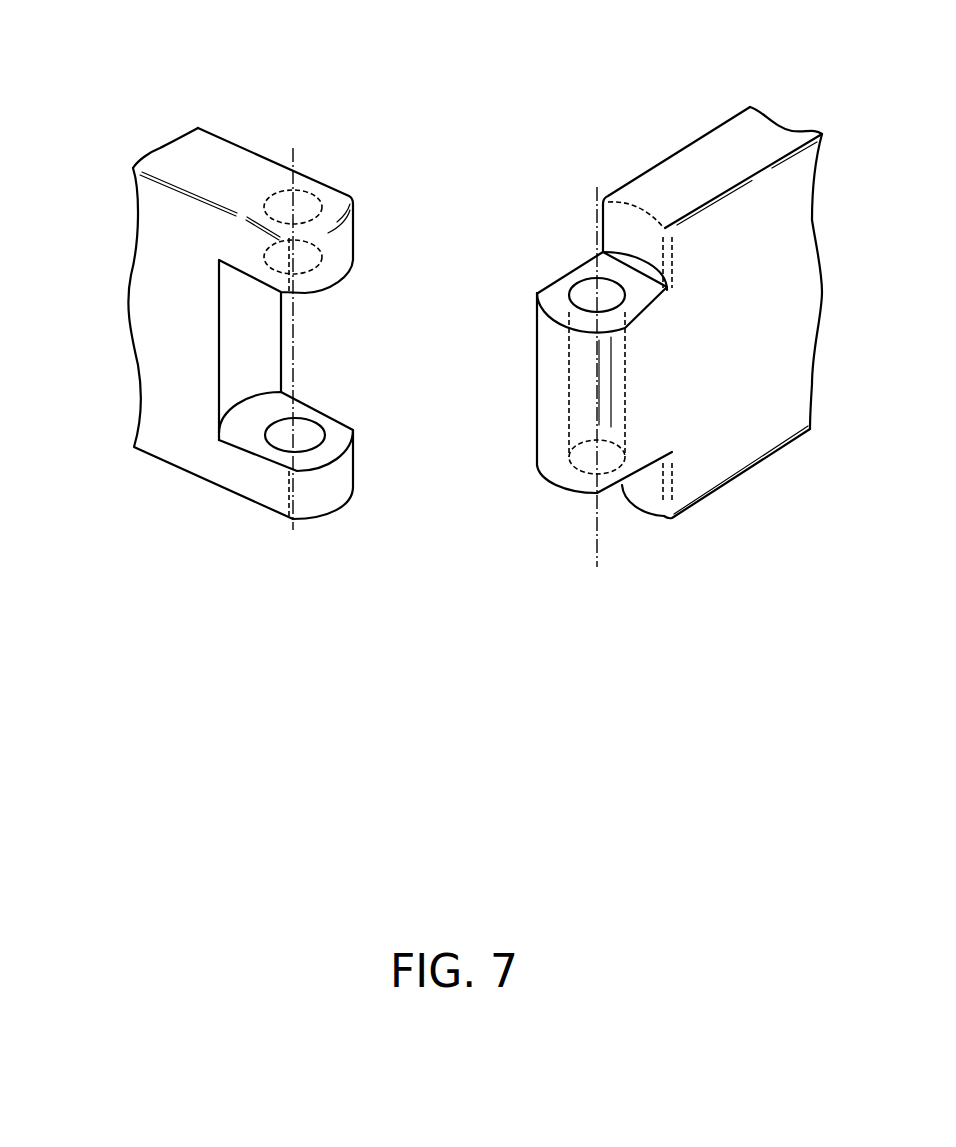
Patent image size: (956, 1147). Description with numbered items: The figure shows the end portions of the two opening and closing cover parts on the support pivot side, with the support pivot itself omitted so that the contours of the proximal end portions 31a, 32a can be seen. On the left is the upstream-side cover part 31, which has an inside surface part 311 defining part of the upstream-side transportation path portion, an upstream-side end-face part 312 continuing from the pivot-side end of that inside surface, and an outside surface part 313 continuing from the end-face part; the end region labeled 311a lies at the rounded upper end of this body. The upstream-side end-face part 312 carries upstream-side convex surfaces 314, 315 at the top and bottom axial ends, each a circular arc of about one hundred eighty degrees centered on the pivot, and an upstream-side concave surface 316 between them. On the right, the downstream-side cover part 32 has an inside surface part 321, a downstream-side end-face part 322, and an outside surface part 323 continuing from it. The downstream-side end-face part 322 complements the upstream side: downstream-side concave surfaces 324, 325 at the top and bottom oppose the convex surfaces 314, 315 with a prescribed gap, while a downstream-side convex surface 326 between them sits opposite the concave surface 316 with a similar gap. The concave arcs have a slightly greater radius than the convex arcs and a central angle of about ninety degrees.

The upstream-side cover part 31 is at (127, 139).
The inside surface part 311 is at (225, 122).
The proximal end portion 31a is at (277, 120).
The rounded end of first hinge body 311a is at (320, 183).
The upstream-side end-face part 312 is at (454, 150).
The outside surface part 313 is at (174, 387).
The upstream-side convex surface 314 is at (342, 245).
The upstream-side convex surface 315 is at (338, 477).
The upstream-side concave surface 316 is at (260, 352).
The downstream-side cover part 32 is at (790, 96).
The inside surface part 321 is at (673, 141).
The proximal end portion 32a is at (631, 157).
The downstream-side end-face part 322 is at (436, 413).
The outside surface part 323 is at (745, 399).
The downstream-side concave surface 324 is at (617, 233).
The downstream-side concave surface 325 is at (653, 490).
The downstream-side convex surface 326 is at (553, 407).